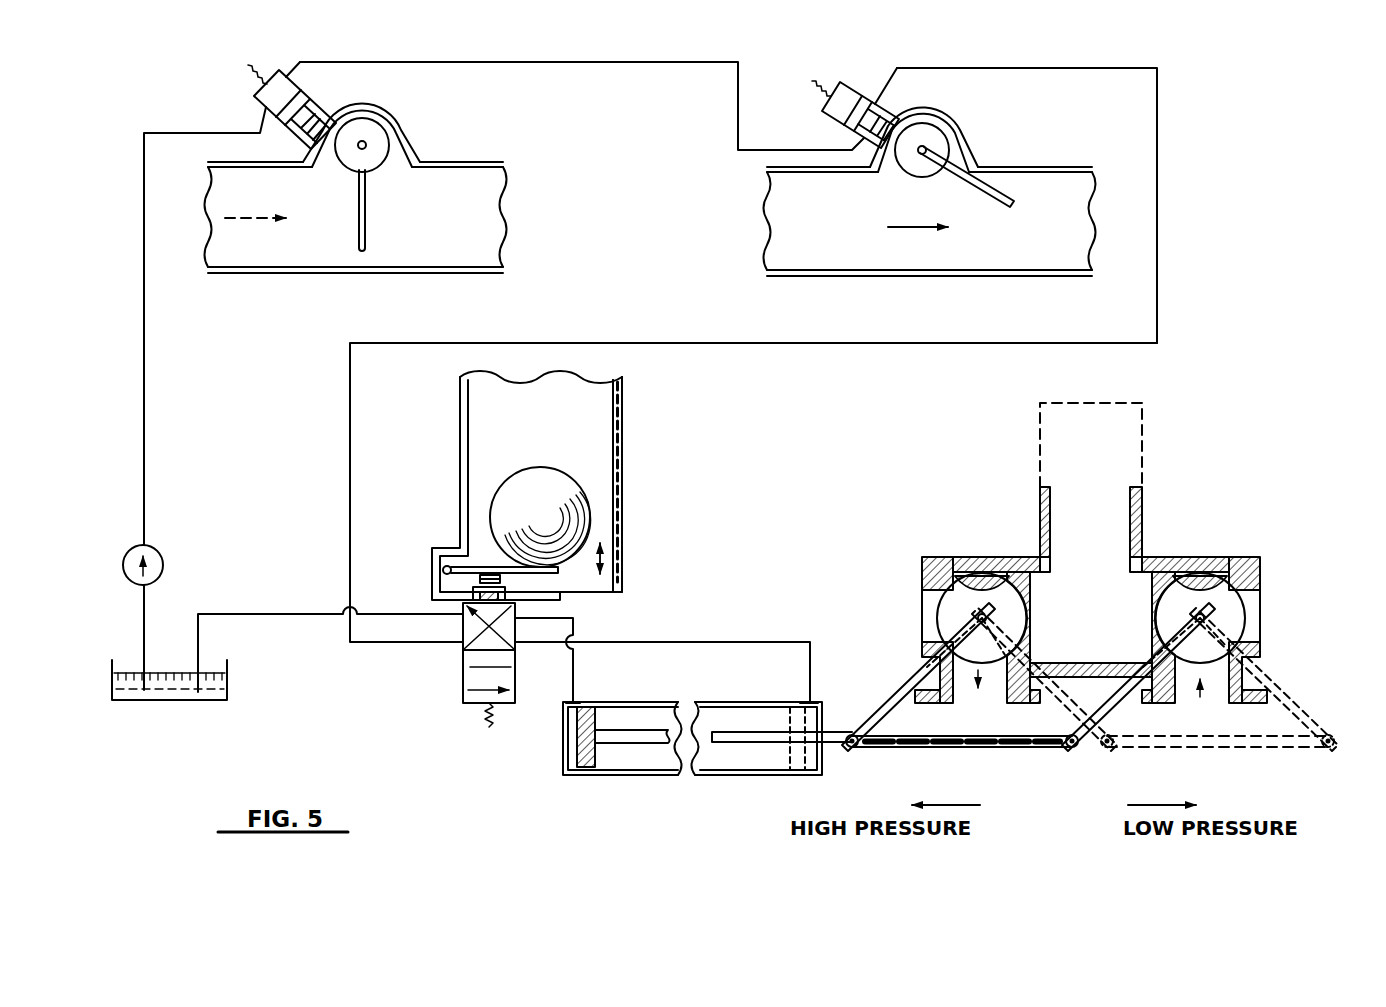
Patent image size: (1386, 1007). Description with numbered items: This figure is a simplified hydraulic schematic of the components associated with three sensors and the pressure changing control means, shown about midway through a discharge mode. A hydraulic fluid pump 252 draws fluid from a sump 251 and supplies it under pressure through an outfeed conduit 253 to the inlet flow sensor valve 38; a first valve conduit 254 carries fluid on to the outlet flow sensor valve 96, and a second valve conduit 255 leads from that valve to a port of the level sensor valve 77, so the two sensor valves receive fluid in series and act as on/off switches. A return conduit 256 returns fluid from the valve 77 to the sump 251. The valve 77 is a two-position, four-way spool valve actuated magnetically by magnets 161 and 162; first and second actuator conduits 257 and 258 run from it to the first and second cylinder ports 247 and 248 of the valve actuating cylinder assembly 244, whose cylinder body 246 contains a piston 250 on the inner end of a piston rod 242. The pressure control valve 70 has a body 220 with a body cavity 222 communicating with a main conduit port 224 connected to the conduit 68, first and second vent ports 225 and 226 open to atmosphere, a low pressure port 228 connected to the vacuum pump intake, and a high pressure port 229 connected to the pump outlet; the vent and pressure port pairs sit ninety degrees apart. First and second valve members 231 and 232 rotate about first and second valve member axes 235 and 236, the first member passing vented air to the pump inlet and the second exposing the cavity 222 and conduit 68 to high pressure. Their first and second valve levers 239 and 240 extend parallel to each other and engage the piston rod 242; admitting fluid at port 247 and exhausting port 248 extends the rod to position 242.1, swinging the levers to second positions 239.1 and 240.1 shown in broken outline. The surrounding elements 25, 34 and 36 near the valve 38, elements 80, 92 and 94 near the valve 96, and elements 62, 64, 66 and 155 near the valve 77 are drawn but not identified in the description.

The first duct 25 is at (310, 278).
The flow sensing roller 34 is at (408, 113).
The vane 36 is at (372, 207).
The inlet flow sensor valve 38 is at (318, 102).
The container 62 is at (647, 478).
The container wall 64 is at (627, 418).
The ball float 66 is at (537, 492).
The conduit 68 is at (1147, 445).
The pressure control valve 70 is at (1232, 525).
The level sensor valve 77 is at (461, 673).
The second duct 80 is at (936, 279).
The flow sensing roller 92 is at (960, 125).
The arm 94 is at (999, 203).
The outlet flow sensor valve 96 is at (834, 128).
The lever 155 is at (491, 564).
The magnet 161 is at (474, 578).
The magnet 162 is at (474, 591).
The body 220 is at (938, 555).
The body cavity 222 is at (1103, 587).
The main conduit port 224 is at (1095, 512).
The first vent port 225 is at (927, 617).
The second vent port 226 is at (1260, 621).
The low pressure port 228 is at (970, 690).
The high pressure port 229 is at (1217, 690).
The first valve member 231 is at (1030, 605).
The second valve member 232 is at (1253, 602).
The first valve member axis 235 is at (937, 607).
The second valve member axis 236 is at (1197, 618).
The first valve lever 239 is at (890, 700).
The second position of first valve lever 239.1 is at (1063, 706).
The second valve lever 240 is at (1113, 700).
The second position of second valve lever 240.1 is at (1335, 660).
The piston rod 242 is at (963, 748).
The extended position of piston rod 242.1 is at (1267, 750).
The valve actuating cylinder assembly 244 is at (697, 793).
The cylinder body 246 is at (703, 775).
The first cylinder port 247 is at (576, 702).
The second cylinder port 248 is at (807, 702).
The piston 250 is at (607, 754).
The sump 251 is at (164, 708).
The hydraulic fluid pump 252 is at (165, 557).
The outfeed conduit 253 is at (149, 369).
The first valve conduit 254 is at (590, 66).
The second valve conduit 255 is at (610, 340).
The return conduit 256 is at (292, 610).
The first actuator conduit 257 is at (578, 620).
The second actuator conduit 258 is at (668, 642).